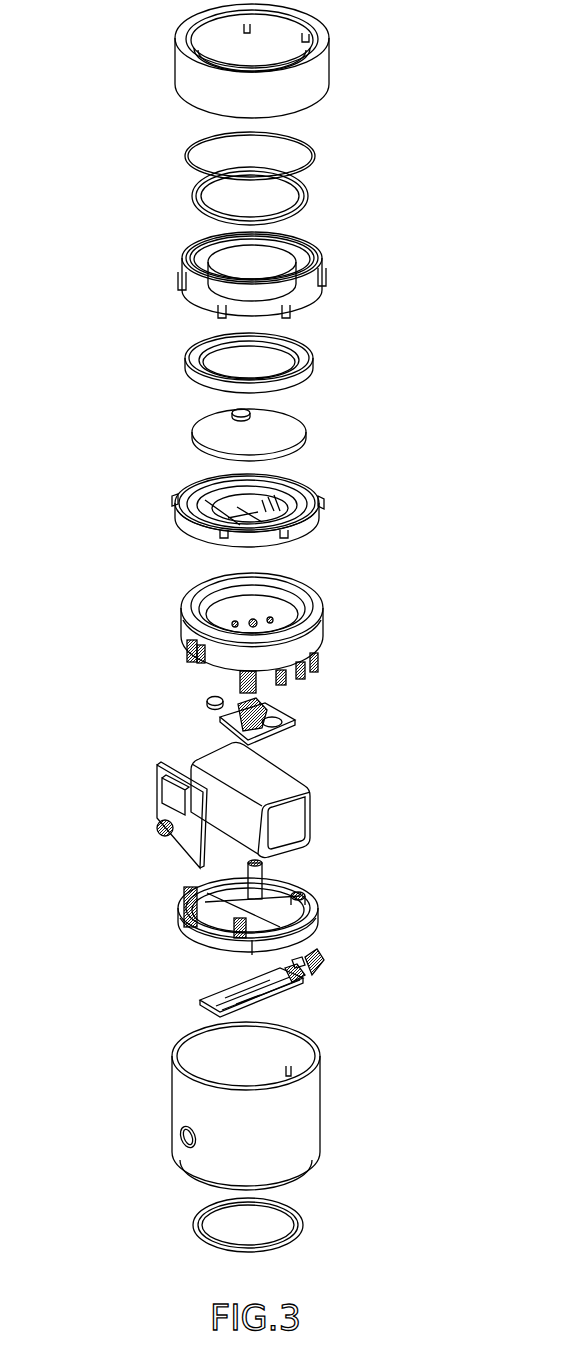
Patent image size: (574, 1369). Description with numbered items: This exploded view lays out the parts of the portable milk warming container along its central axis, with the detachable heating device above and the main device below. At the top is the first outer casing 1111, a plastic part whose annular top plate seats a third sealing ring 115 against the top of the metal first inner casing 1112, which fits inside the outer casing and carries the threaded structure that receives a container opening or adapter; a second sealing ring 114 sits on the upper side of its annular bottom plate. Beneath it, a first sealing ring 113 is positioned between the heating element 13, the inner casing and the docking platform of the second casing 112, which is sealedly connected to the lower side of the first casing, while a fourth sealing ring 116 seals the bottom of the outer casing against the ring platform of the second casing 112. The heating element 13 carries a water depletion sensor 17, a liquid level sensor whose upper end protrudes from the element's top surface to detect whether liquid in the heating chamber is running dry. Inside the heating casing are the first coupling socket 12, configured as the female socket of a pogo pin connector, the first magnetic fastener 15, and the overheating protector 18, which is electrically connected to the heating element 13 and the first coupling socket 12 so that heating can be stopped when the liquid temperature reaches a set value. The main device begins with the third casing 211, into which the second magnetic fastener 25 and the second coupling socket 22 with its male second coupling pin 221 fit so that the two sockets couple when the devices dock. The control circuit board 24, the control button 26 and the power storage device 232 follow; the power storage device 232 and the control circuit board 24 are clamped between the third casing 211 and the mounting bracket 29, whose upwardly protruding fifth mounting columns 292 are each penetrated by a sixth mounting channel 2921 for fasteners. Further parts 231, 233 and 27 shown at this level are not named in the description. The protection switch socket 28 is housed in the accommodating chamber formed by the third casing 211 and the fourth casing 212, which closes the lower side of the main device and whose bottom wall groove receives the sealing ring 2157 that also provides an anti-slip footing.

The first outer casing 1111 is at (178, 76).
The third sealing ring 115 is at (315, 158).
The second sealing ring 114 is at (308, 192).
The first inner casing 1112 is at (182, 274).
The first sealing ring 113 is at (313, 365).
The water depletion sensor 17 is at (232, 412).
The heating element 13 is at (192, 434).
The first coupling socket 12 is at (190, 492).
The first magnetic fastener 15 is at (265, 492).
The overheating protector 18 is at (300, 497).
The second casing 112 is at (175, 512).
The fourth sealing ring 116 is at (320, 508).
The third casing 211 is at (182, 625).
The second magnetic fastener 25 is at (205, 701).
The second coupling pin 221 is at (268, 708).
The second coupling socket 22 is at (297, 722).
The control circuit board 24 is at (158, 808).
The control button 26 is at (158, 832).
The power storage device 232 is at (310, 812).
The sixth mounting channel 2921 is at (306, 893).
The fifth mounting columns 292 is at (318, 905).
The mounting bracket 29 is at (178, 914).
The lower circuit board 231 is at (215, 997).
The plug 27 is at (323, 963).
The charging port 233 is at (306, 985).
The protection switch socket 28 is at (282, 1002).
The fourth casing 212 is at (172, 1102).
The sealing ring 2157 is at (193, 1223).